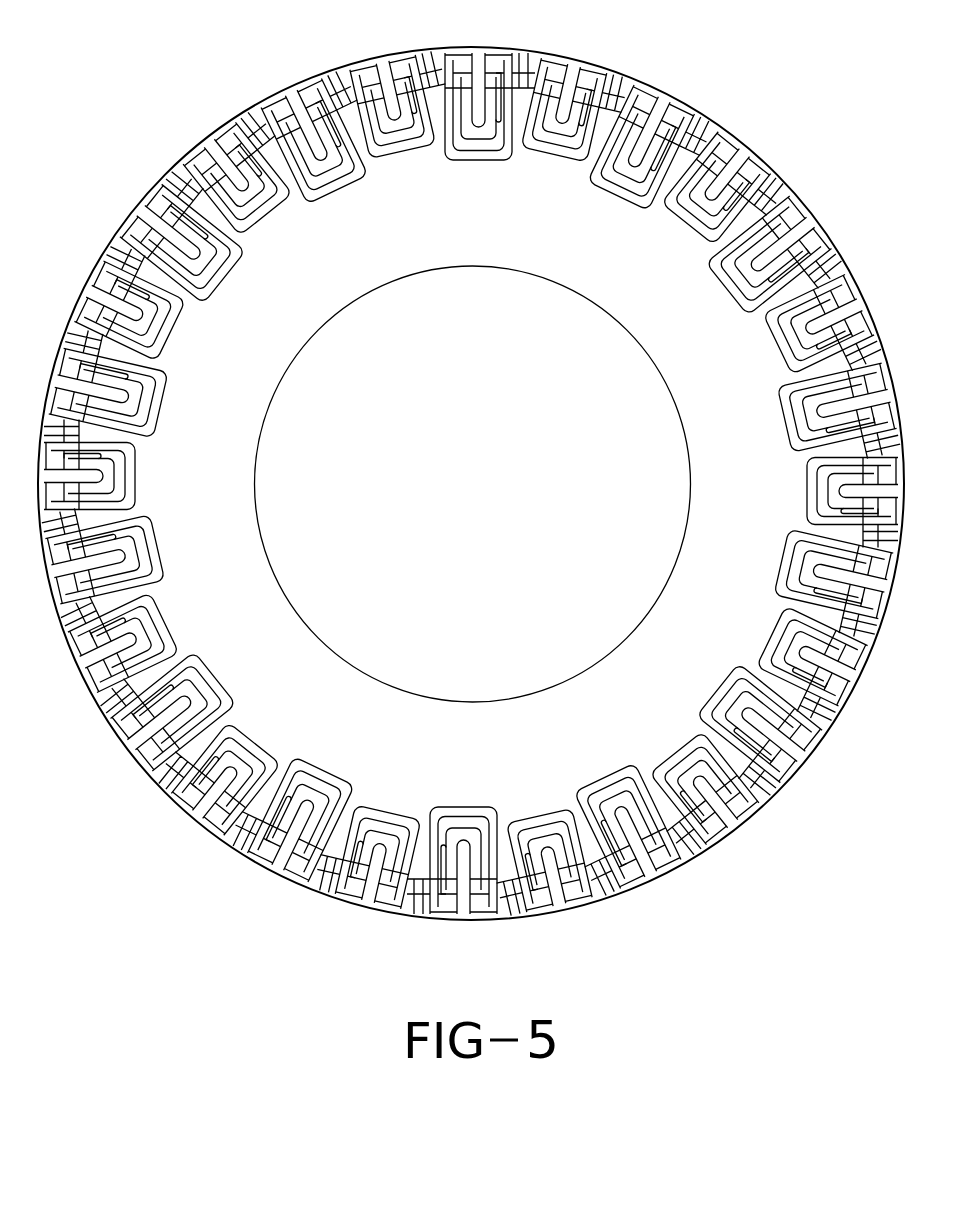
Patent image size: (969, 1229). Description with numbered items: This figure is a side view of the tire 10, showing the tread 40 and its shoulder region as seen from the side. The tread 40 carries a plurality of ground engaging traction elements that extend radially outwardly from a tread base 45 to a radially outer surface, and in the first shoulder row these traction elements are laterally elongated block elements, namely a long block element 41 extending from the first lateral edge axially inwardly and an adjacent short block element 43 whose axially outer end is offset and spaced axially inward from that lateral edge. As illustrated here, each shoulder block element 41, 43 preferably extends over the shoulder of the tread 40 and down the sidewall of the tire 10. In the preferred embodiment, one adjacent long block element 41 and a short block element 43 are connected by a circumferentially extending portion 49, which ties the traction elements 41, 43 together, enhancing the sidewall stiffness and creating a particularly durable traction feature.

The tire 10 is at (143, 115).
The tread 40 is at (722, 138).
The long block element 41 is at (780, 212).
The short block element 43 is at (817, 247).
The tread base 45 is at (680, 165).
The circumferentially extending portion 49 is at (743, 280).